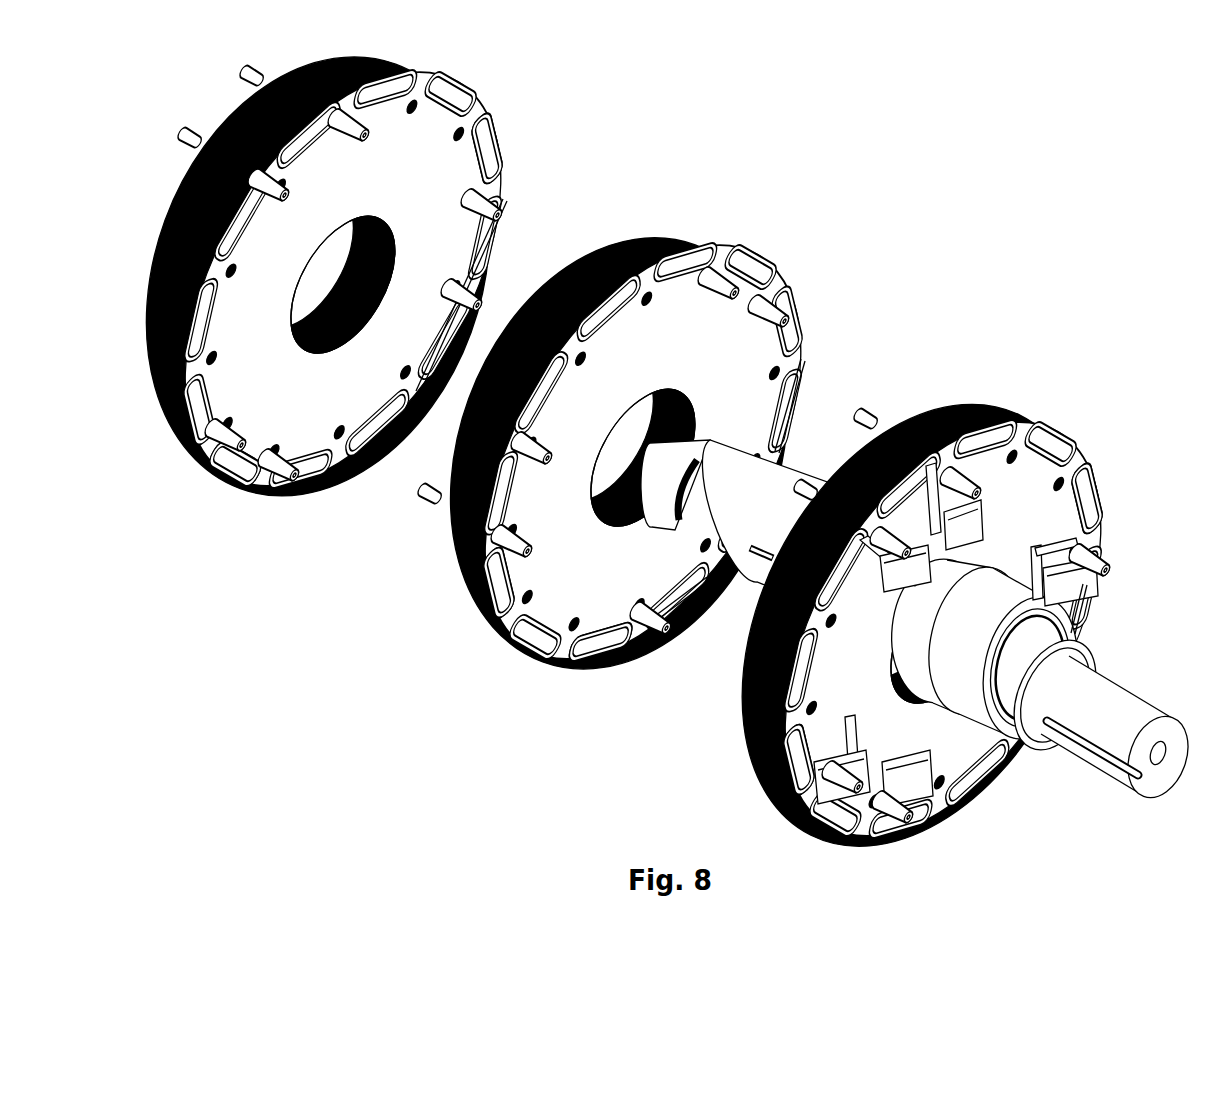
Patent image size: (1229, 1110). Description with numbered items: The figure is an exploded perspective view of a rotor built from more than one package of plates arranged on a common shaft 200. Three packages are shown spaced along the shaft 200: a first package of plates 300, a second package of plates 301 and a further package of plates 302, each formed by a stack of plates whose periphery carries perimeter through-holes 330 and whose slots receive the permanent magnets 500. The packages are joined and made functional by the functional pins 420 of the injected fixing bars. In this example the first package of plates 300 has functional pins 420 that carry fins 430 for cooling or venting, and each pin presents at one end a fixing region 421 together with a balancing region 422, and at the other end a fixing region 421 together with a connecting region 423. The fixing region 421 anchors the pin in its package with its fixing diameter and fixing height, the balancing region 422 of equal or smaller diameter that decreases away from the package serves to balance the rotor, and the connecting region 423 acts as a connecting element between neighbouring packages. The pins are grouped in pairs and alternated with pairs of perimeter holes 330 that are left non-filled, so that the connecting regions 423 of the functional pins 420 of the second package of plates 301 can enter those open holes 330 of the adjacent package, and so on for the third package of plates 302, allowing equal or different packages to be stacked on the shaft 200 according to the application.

The shaft 200 is at (1120, 703).
The package of plates 300 is at (1032, 484).
The second package of plates 301 is at (547, 612).
The third package of plates 302 is at (428, 127).
The perimeter through-holes 330 is at (487, 125).
The functional pin 420 is at (952, 482).
The fixing region 421 is at (262, 82).
The balancing region 422 is at (201, 142).
The connecting region 423 is at (497, 216).
The fins 430 is at (1067, 580).
The magnets 500 is at (250, 465).